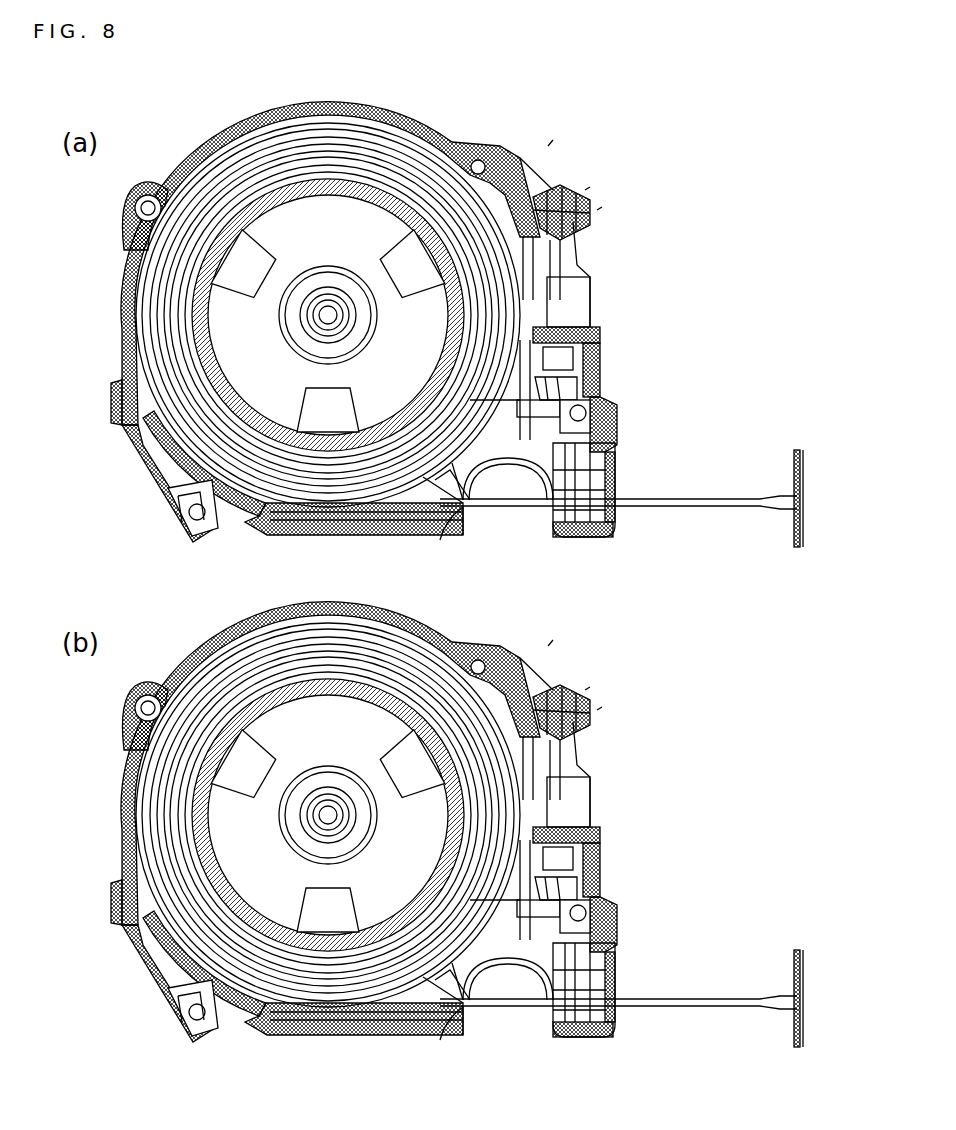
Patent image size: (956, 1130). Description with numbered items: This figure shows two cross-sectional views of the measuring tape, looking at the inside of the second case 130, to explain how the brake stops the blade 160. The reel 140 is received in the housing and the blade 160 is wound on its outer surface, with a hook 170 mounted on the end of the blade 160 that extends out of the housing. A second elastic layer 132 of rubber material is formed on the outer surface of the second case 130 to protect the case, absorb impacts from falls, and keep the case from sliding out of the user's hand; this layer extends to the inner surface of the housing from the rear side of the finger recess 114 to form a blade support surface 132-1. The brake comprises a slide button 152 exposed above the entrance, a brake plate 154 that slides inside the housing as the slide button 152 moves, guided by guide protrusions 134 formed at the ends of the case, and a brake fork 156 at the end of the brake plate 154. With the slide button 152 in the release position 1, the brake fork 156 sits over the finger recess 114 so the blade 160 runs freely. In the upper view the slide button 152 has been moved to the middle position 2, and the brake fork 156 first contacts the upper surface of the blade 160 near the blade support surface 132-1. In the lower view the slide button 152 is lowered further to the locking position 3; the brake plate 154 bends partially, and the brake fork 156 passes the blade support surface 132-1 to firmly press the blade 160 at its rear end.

The second case 130 is at (196, 146).
The second elastic layer 132 is at (124, 218).
The blade support surface 132-1 is at (432, 535).
The guide protrusions 134 is at (490, 318).
The reel 140 is at (292, 192).
The slide button 152 is at (573, 190).
The brake plate 154 is at (607, 397).
The brake fork 156 is at (470, 507).
The finger recess 114 is at (528, 528).
The blade 160 is at (360, 148).
The hook 170 is at (805, 472).
The release position 1 is at (553, 140).
The middle position 2 is at (590, 187).
The locking position 3 is at (602, 207).